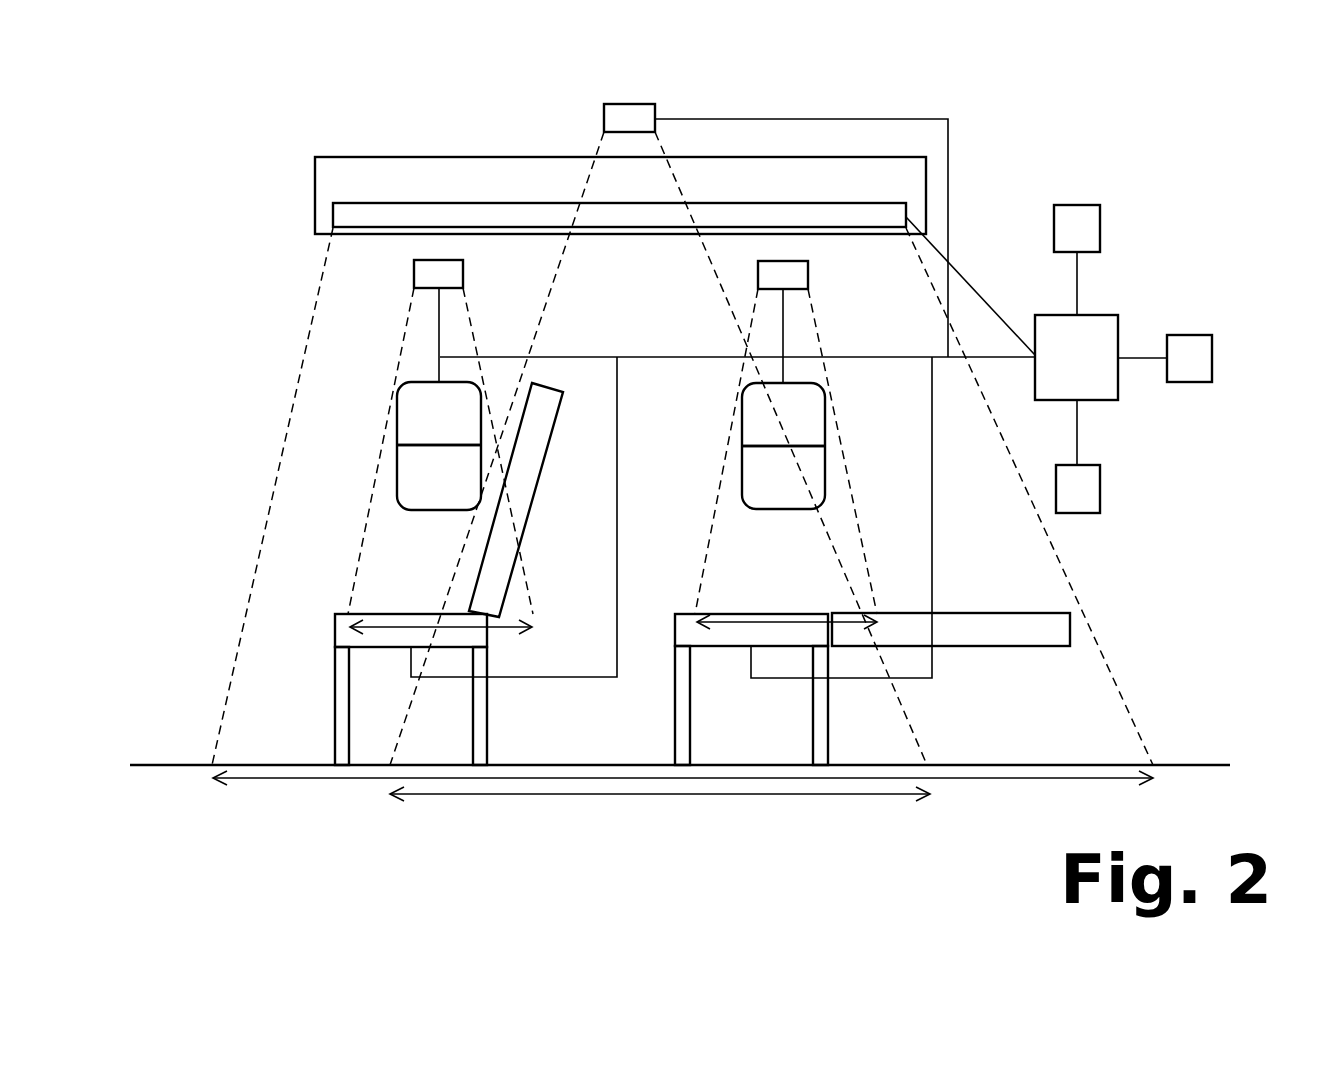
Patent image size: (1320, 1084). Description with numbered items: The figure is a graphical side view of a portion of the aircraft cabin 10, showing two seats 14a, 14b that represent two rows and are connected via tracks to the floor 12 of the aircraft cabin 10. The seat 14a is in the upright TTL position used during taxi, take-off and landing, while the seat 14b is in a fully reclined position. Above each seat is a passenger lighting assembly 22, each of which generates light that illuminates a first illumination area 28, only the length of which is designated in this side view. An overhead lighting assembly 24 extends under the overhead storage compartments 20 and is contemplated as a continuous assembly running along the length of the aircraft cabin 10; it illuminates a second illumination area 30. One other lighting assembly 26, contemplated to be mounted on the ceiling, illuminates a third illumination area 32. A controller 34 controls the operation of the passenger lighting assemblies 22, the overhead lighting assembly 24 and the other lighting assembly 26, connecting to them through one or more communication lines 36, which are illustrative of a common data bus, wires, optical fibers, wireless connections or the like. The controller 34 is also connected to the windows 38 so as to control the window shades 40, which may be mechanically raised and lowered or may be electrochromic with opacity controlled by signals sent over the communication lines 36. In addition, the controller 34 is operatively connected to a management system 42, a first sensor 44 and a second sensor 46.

The aircraft cabin 10 is at (1133, 163).
The floor 12 is at (523, 765).
The seat 14a is at (408, 613).
The seat 14b is at (750, 614).
The overhead storage compartments 20 is at (517, 175).
The passenger lighting assembly 22 is at (414, 274).
The overhead lighting assembly 24 is at (687, 203).
The other lighting assembly 26 is at (604, 112).
The first illumination area 28 is at (393, 627).
The second illumination area 30 is at (738, 780).
The third illumination area 32 is at (555, 797).
The controller 34 is at (1118, 400).
The communication lines 36 is at (973, 282).
The window 38 is at (398, 446).
The window shade 40 is at (611, 424).
The management system 42 is at (1073, 203).
The first sensor 44 is at (1188, 335).
The second sensor 46 is at (1100, 488).